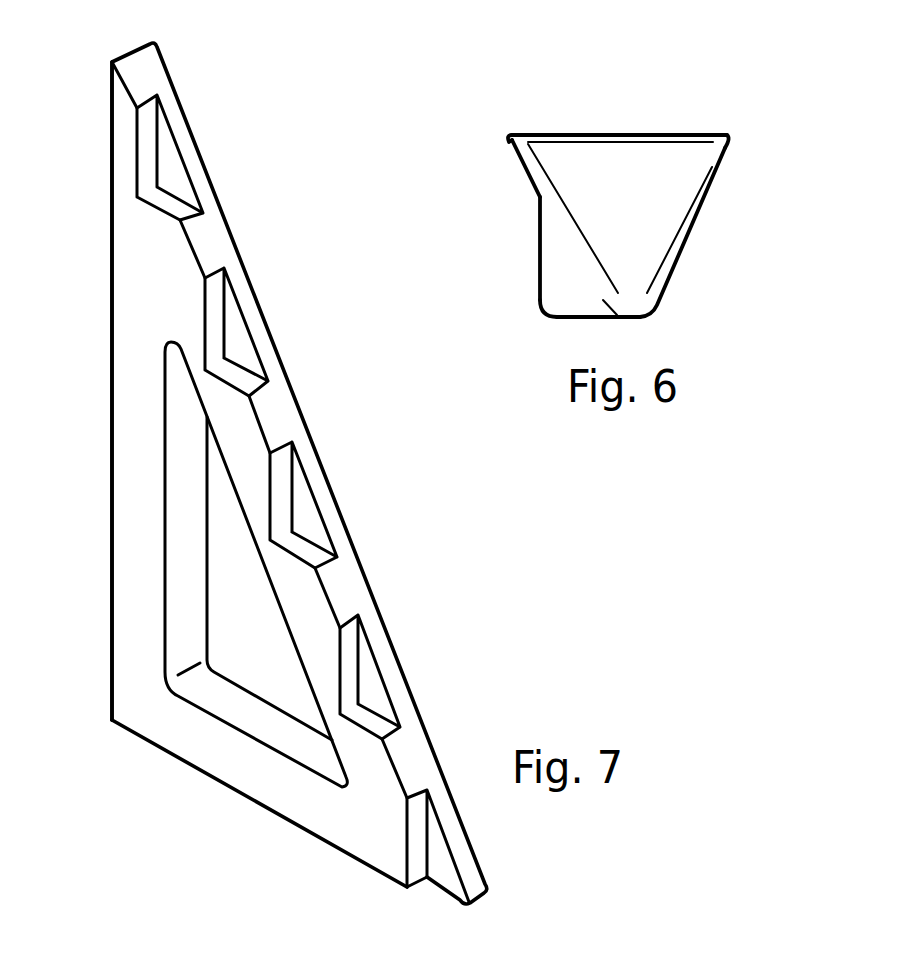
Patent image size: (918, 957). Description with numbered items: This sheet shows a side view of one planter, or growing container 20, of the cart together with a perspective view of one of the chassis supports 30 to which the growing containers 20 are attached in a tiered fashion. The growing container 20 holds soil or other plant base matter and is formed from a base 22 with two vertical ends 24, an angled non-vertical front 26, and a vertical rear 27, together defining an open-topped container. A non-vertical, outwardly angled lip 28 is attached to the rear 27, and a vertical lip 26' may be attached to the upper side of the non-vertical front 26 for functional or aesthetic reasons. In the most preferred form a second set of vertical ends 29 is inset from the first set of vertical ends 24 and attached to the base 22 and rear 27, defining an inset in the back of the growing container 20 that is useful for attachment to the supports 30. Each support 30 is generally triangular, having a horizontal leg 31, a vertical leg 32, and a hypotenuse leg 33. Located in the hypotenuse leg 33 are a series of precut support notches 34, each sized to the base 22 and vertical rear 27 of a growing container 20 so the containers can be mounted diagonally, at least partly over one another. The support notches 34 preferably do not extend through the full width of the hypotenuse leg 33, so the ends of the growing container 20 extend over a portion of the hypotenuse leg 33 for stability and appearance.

In FIG. 6, the growing container 20 is at (584, 90).
In FIG. 6, the base 22 is at (632, 318).
In FIG. 6, the vertical ends 24 is at (627, 167).
In FIG. 6, the angled non-vertical front 26 is at (712, 232).
In FIG. 6, the vertical lip 26' is at (767, 115).
In FIG. 6, the vertical rear 27 is at (540, 250).
In FIG. 6, the non-vertical, outwardly angled lip 28 is at (524, 174).
In FIG. 6, the second set of vertical ends 29 is at (565, 289).
In FIG. 7, the support 30 is at (294, 349).
In FIG. 7, the horizontal leg 31 is at (228, 767).
In FIG. 7, the vertical leg 32 is at (132, 425).
In FIG. 7, the hypotenuse leg 33 is at (213, 237).
In FIG. 7, the support notch 34 is at (380, 688).